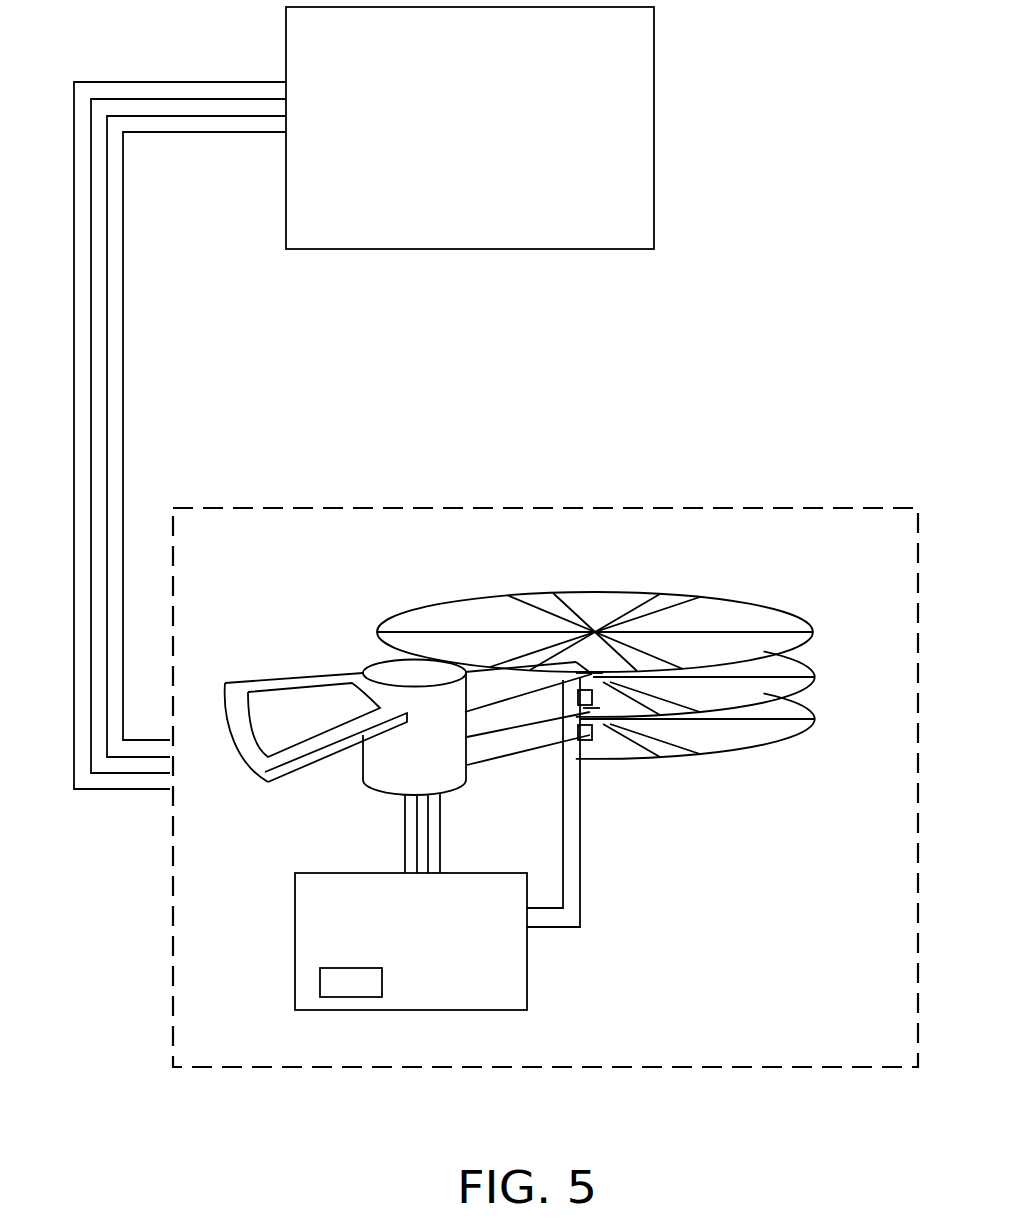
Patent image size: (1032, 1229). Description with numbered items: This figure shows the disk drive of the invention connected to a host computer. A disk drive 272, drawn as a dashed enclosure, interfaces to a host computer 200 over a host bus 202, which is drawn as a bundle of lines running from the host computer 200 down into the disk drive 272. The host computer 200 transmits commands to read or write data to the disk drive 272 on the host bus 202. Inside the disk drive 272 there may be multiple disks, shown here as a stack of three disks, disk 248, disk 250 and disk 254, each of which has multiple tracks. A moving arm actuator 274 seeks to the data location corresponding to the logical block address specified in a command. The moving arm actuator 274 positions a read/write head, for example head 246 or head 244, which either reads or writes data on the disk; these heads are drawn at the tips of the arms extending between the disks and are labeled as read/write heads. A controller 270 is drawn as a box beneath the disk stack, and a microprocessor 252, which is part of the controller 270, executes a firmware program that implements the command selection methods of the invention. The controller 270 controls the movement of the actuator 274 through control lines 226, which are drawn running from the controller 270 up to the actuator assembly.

The host computer 200 is at (563, 64).
The host bus 202 is at (125, 330).
The disk drive 272 is at (455, 508).
The moving arm actuator 274 is at (277, 661).
The disk 248 is at (815, 632).
The disk 250 is at (816, 677).
The disk 254 is at (816, 717).
The read/write head 246 is at (597, 681).
The read/write head 244 is at (607, 678).
The control lines 226 is at (403, 836).
The controller 270 is at (295, 916).
The microprocessor 252 is at (330, 997).